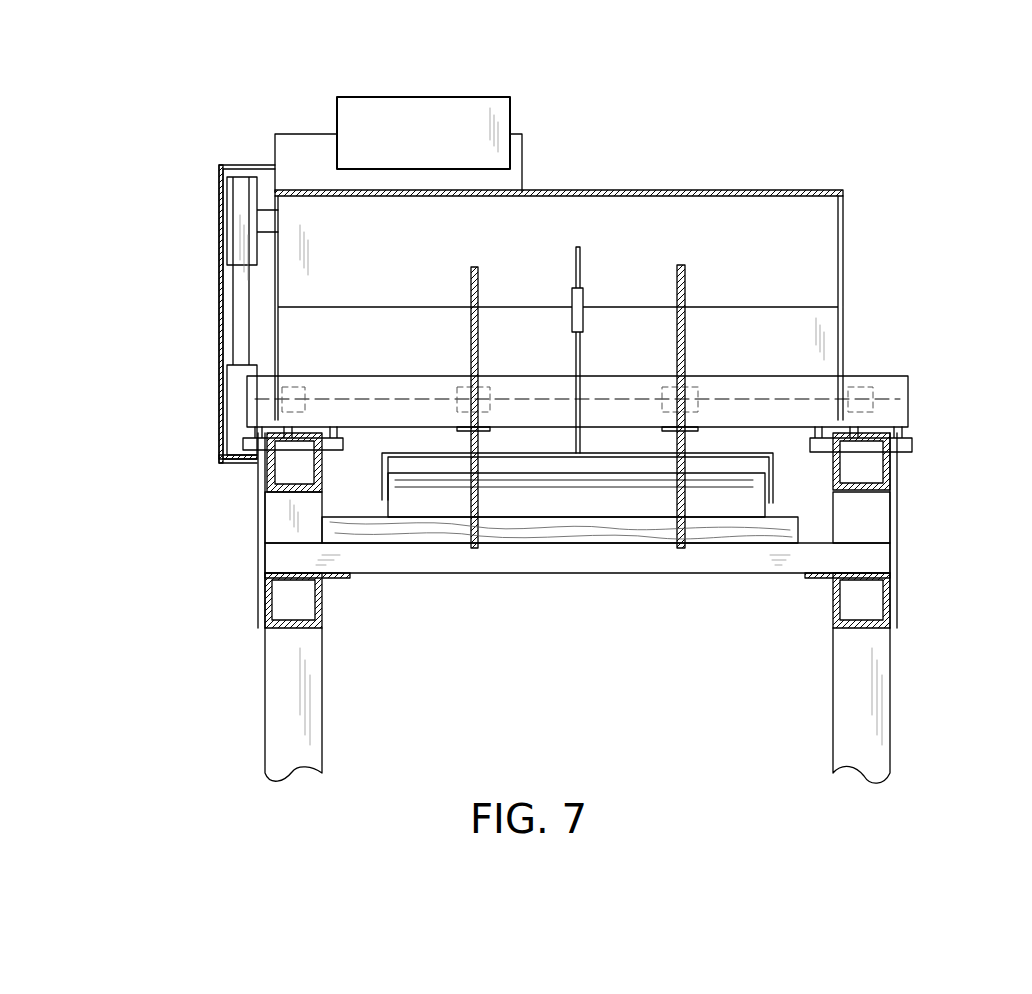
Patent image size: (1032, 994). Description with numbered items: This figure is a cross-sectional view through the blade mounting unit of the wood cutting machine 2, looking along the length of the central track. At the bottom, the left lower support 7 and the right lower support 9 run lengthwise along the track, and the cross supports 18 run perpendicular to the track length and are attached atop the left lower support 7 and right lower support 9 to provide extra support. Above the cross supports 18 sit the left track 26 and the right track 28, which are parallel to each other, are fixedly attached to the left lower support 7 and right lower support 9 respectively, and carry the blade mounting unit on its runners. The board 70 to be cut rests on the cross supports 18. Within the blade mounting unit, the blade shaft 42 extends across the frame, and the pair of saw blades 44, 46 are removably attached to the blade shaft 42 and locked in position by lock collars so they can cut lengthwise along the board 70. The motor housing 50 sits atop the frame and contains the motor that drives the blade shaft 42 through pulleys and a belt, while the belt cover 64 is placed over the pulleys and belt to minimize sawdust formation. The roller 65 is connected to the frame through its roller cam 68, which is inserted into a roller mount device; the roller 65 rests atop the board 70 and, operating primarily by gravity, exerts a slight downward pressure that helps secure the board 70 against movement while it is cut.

The wood cutting machine 2 is at (168, 138).
The left lower support 7 is at (265, 600).
The right lower support 9 is at (890, 603).
The cross supports 18 is at (600, 575).
The left track 26 is at (267, 477).
The right track 28 is at (890, 463).
The blade shaft 42 is at (777, 398).
The saw blade 44 is at (474, 268).
The saw blade 46 is at (681, 265).
The motor housing 50 is at (300, 134).
The belt cover 64 is at (219, 297).
The roller 65 is at (637, 495).
The roller cam 68 is at (575, 437).
The board 70 is at (430, 535).